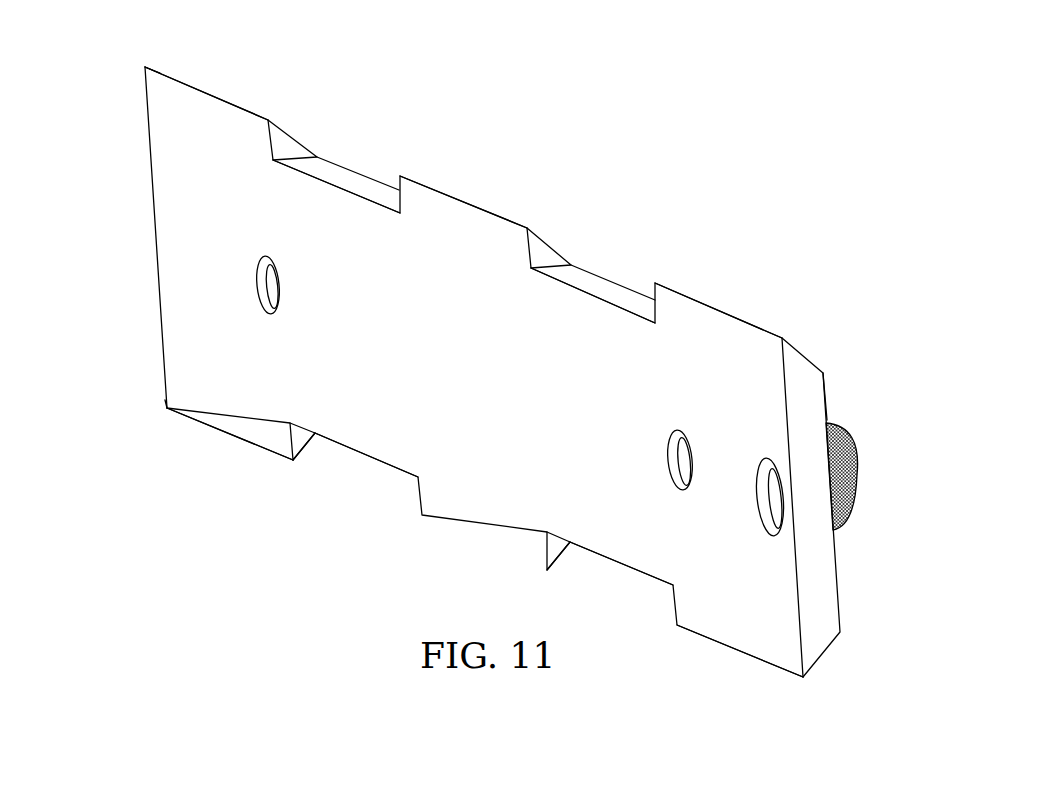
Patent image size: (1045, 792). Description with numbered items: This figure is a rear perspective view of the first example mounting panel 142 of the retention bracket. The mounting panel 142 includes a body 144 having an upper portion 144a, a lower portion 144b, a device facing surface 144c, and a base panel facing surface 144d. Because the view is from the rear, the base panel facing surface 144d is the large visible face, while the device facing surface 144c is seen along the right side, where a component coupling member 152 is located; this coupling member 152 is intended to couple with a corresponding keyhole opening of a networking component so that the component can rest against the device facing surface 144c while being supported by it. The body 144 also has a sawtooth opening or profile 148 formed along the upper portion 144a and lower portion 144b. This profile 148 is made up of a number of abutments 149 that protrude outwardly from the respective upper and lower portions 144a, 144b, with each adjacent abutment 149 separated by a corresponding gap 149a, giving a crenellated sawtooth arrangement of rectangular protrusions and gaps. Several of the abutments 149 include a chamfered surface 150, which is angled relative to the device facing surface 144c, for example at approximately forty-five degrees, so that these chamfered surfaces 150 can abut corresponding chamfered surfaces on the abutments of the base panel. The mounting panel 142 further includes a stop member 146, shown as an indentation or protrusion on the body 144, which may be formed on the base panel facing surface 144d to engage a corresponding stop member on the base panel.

The mounting panel 142 is at (488, 371).
The body 144 is at (173, 182).
The upper portion 144a is at (142, 72).
The lower portion 144b is at (150, 394).
The device facing surface 144c is at (829, 403).
The base panel facing surface 144d is at (607, 419).
The stop member 146 is at (768, 490).
The sawtooth opening or profile 148 is at (521, 270).
The abutment 149 is at (198, 116).
The gap 149a is at (366, 167).
The chamfered surface 150 is at (287, 131).
The component coupling member 152 is at (853, 467).